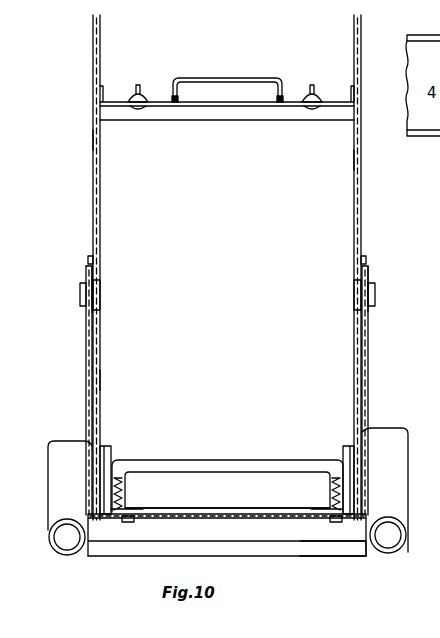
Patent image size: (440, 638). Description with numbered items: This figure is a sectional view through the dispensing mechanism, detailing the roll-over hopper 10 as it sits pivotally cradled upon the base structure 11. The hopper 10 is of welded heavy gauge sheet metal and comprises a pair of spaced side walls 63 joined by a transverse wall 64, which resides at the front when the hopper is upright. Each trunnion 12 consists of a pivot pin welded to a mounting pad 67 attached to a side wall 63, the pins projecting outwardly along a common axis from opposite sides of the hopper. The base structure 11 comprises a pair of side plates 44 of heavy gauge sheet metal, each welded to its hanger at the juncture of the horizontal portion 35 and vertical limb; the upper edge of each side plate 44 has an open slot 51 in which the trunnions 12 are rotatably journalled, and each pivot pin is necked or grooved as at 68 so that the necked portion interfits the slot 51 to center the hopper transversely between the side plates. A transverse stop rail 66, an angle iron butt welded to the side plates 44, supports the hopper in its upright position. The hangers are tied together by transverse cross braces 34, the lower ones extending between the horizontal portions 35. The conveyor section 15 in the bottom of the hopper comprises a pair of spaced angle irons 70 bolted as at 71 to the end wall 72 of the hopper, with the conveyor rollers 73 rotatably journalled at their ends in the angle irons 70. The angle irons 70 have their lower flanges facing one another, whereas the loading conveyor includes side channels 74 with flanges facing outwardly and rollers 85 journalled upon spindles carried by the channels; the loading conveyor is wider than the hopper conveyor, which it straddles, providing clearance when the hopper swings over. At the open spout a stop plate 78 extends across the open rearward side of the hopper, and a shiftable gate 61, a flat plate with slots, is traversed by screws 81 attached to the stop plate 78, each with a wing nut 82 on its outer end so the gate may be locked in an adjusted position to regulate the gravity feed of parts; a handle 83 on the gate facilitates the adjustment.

The roll-over hopper 10 is at (90, 140).
The base structure 11 is at (85, 382).
The trunnion 12 is at (80, 295).
The conveyor section 15 is at (227, 488).
The cross brace 34 is at (140, 548).
The horizontal portion 35 is at (48, 546).
The side plate 44 is at (86, 360).
The open slot 51 is at (86, 278).
The shiftable gate 61 is at (162, 96).
The side wall 63 is at (93, 190).
The transverse wall 64 is at (340, 166).
The stop rail 66 is at (312, 530).
The mounting pad 67 is at (88, 262).
The necked portion 68 is at (101, 296).
The angle iron 70 is at (122, 490).
The bolt 71 is at (134, 524).
The end wall 72 is at (198, 542).
The conveyor roller 73 is at (188, 480).
The side channel 74 is at (110, 455).
The stop plate 78 is at (232, 122).
The screw 81 is at (138, 110).
The wing nut 82 is at (135, 96).
The handle 83 is at (236, 78).
The roller 85 is at (278, 470).